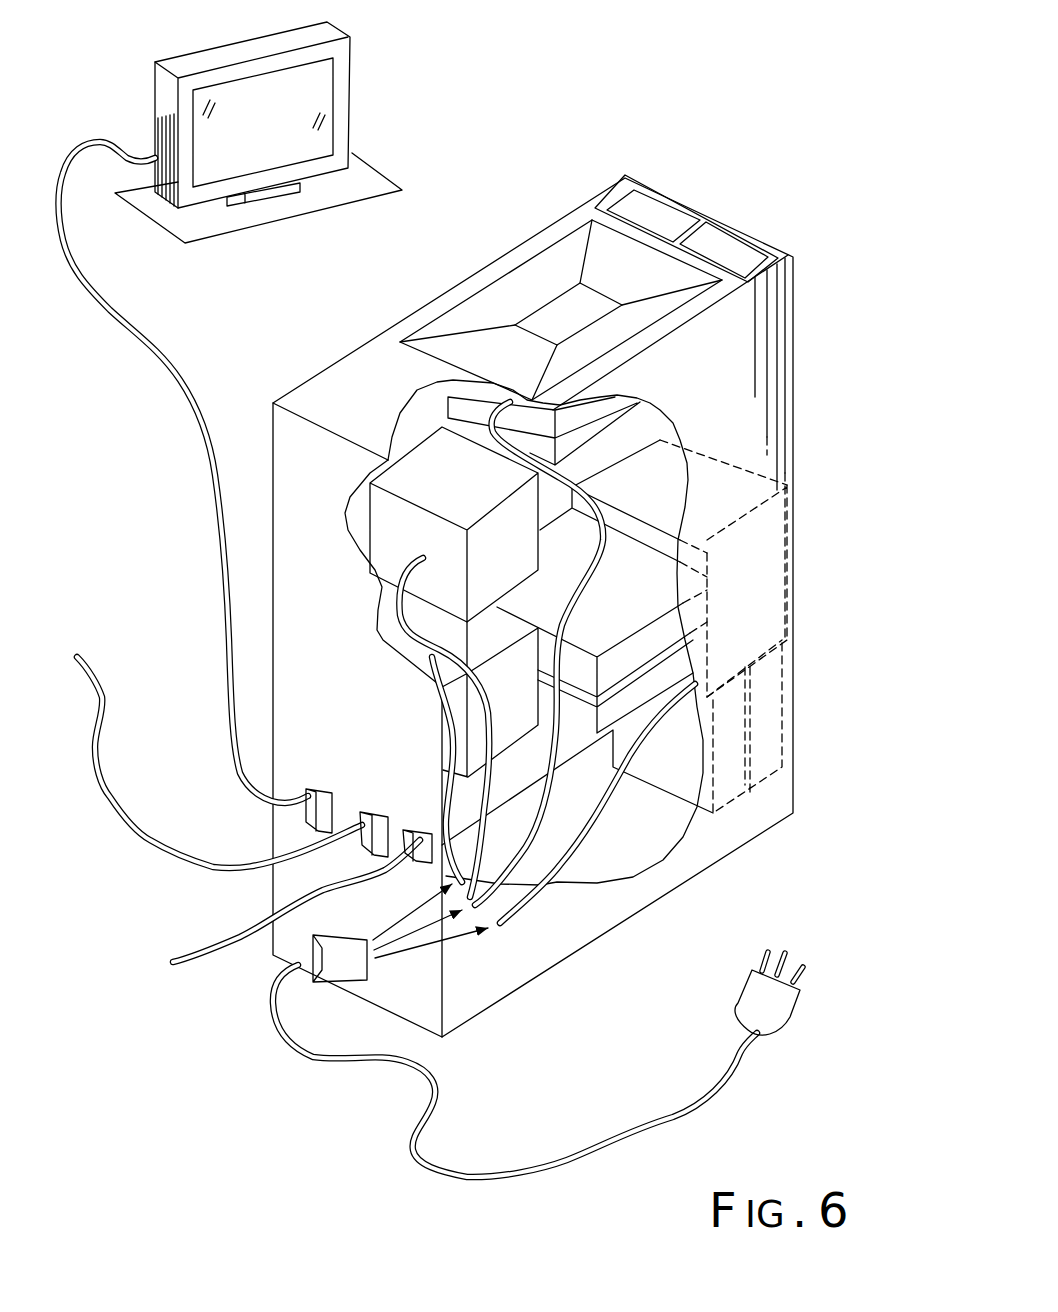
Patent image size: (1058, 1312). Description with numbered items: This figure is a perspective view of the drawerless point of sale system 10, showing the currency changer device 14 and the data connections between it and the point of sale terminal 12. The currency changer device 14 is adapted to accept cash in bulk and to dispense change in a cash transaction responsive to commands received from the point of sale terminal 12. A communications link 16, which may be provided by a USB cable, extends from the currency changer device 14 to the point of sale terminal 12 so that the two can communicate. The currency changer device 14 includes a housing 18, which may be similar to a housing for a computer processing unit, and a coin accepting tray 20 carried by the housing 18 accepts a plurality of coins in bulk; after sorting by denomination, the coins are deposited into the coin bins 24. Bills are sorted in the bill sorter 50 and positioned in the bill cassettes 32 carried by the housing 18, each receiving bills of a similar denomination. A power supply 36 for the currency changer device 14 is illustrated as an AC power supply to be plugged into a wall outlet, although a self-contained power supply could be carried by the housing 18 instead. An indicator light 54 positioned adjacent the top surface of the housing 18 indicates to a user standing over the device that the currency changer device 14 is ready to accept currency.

The drawerless point of sale system 10 is at (477, 599).
The point of sale terminal 12 is at (368, 108).
The currency changer device 14 is at (507, 600).
The communications link 16 is at (227, 622).
The housing 18 is at (794, 270).
The coin accepting tray 20 is at (530, 267).
The coin bins 24 is at (440, 402).
The bill cassettes 32 is at (718, 632).
The power supply 36 is at (280, 1035).
The bill sorter 50 is at (767, 563).
The indicator light 54 is at (714, 210).